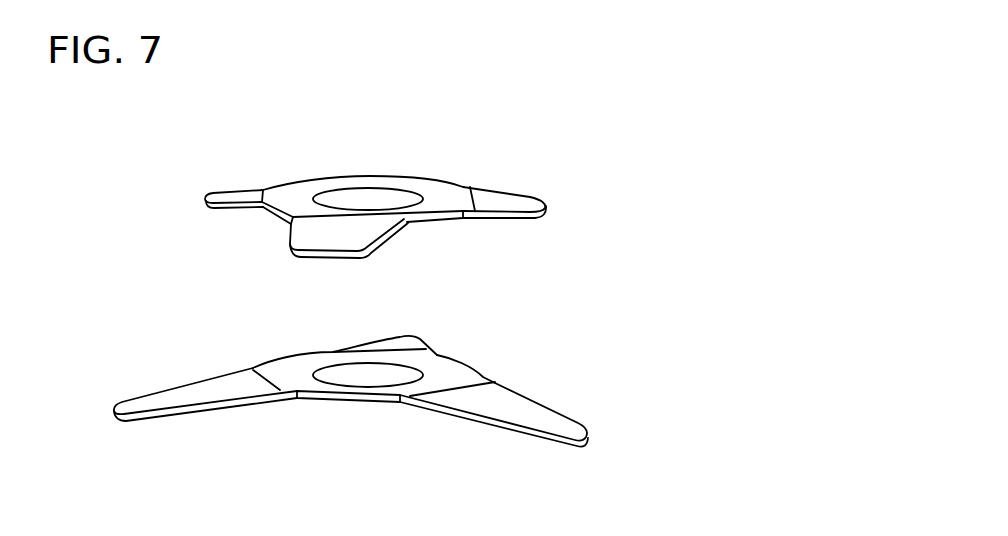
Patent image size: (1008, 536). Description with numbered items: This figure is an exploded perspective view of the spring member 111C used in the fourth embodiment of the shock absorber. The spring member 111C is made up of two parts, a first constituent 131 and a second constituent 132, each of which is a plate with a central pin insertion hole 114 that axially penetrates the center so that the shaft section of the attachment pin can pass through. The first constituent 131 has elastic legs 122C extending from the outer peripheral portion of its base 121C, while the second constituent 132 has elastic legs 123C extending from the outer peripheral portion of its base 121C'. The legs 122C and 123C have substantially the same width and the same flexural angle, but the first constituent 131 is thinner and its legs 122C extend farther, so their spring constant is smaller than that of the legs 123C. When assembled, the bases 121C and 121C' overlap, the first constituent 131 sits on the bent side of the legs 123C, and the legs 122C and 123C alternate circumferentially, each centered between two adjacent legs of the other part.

The spring member 111C is at (770, 261).
The second constituent 132 is at (612, 190).
The first constituent 131 is at (627, 404).
The pin insertion hole 114 is at (337, 200).
The base 121C' is at (371, 165).
The base 121C is at (388, 352).
The elastic leg 123C is at (237, 196).
The elastic leg 122C is at (188, 397).